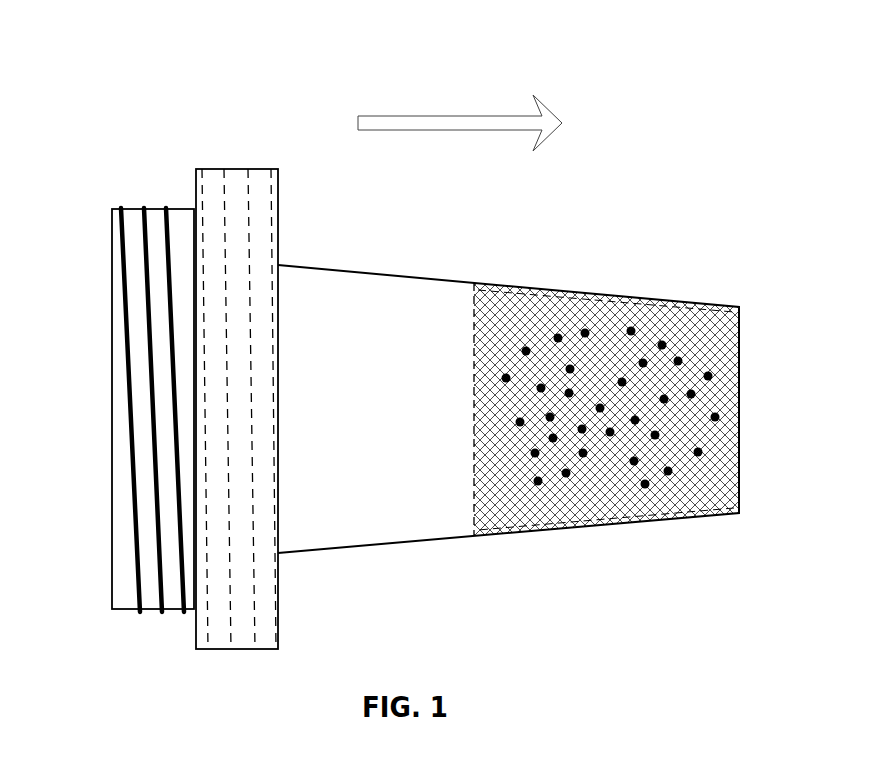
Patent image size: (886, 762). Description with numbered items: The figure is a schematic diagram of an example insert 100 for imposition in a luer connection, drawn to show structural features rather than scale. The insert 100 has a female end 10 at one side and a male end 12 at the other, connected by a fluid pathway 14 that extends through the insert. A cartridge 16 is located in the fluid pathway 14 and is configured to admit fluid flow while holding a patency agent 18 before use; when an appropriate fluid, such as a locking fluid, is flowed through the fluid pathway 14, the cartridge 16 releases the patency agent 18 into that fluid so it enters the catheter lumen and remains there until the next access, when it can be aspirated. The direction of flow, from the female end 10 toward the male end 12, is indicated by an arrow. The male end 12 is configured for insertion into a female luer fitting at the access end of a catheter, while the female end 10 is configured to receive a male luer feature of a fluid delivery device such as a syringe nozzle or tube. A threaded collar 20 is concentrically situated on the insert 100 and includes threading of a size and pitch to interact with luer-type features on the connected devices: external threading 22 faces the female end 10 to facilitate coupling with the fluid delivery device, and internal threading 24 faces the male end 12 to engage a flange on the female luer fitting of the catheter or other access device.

The insert 100 is at (124, 50).
The female end 10 is at (80, 419).
The male end 12 is at (785, 452).
The fluid pathway 14 is at (378, 424).
The cartridge 16 is at (482, 367).
The patency agent 18 is at (520, 330).
The threaded collar 20 is at (194, 618).
The external threading 22 is at (166, 207).
The internal threading 24 is at (244, 193).